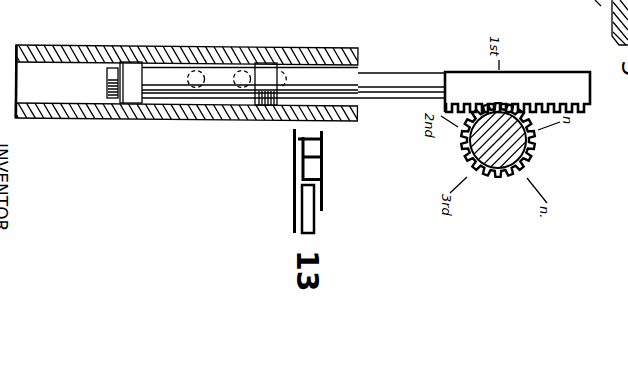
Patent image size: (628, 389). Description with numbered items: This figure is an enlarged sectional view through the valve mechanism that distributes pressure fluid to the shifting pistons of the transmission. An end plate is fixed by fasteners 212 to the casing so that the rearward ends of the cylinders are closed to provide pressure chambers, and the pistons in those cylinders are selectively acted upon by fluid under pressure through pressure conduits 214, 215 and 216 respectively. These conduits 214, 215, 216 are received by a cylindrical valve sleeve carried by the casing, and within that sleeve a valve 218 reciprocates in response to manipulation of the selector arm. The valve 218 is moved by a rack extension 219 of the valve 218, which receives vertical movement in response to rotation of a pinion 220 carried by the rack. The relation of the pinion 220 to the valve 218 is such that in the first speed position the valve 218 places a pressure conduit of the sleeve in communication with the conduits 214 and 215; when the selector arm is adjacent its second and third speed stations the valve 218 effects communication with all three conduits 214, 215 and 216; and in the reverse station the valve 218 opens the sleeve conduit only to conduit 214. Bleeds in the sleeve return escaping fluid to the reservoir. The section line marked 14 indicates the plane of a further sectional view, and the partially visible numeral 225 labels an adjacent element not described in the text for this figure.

The fasteners 212 is at (324, 57).
The pressure conduit 214 is at (205, 120).
The pressure conduit 215 is at (252, 106).
The pressure conduit 216 is at (285, 106).
The valve 218 is at (191, 69).
The rack extension 219 is at (584, 93).
The pinion 220 is at (497, 168).
The member 225 is at (86, 13).
The section line 14- 14 is at (5, 57).